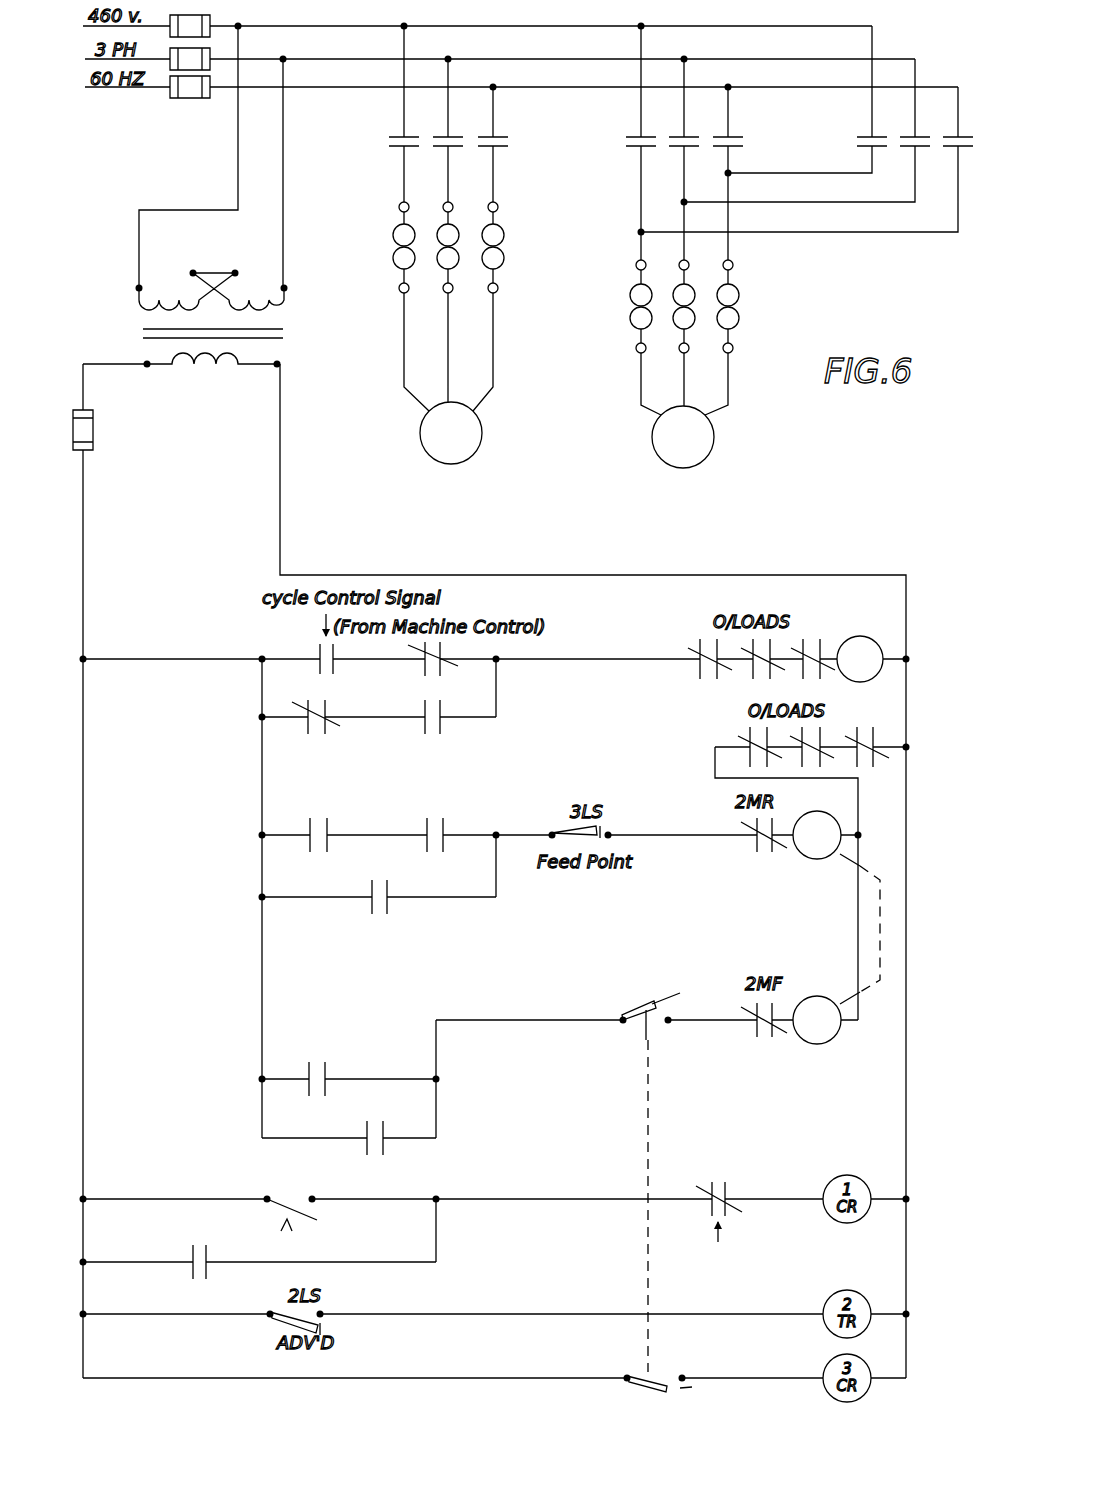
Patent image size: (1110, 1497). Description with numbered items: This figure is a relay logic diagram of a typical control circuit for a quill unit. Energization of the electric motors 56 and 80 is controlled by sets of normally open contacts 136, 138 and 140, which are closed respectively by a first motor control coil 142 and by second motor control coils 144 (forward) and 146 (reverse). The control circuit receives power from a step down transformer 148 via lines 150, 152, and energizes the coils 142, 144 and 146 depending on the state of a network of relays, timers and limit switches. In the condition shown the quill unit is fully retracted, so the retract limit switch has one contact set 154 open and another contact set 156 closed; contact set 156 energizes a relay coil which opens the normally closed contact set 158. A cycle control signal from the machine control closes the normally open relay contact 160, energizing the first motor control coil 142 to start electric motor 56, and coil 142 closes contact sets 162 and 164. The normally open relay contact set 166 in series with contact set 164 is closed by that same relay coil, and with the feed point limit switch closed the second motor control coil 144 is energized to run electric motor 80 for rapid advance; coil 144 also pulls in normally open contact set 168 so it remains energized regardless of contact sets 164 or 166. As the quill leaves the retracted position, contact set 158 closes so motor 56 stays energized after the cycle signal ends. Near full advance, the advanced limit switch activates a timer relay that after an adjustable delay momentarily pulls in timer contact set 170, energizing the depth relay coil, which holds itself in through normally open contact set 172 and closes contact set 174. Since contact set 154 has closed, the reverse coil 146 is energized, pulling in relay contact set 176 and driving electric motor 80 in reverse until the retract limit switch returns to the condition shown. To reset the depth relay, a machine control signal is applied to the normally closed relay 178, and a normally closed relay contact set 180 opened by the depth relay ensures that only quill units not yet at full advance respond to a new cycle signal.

The normally open contacts 136 is at (392, 131).
The normally open contacts 138 is at (626, 131).
The normally open contacts 140 is at (858, 131).
The electric motor 56 is at (482, 424).
The electric motor 80 is at (714, 427).
The step down transformer 148 is at (292, 332).
The line 150 is at (83, 478).
The line 152 is at (280, 465).
The first motor control coil 142 is at (868, 637).
The second motor control coil (forward) 144 is at (840, 796).
The second motor control coil (reverse) 146 is at (846, 978).
The contact set 154 is at (640, 1028).
The contact set 156 is at (704, 1372).
The normally closed contact set 158 is at (312, 698).
The normally open relay contact 160 is at (316, 647).
The contact set 162 is at (452, 733).
The contact set 164 is at (303, 822).
The normally open relay contact set 166 is at (452, 826).
The normally open contact set 168 is at (378, 914).
The timer contact set 170 is at (318, 1195).
The normally open contact set 172 is at (212, 1258).
The contact set 174 is at (392, 1150).
The relay contact set 176 is at (317, 1056).
The normally closed relay 178 is at (723, 1180).
The normally closed relay contact set 180 is at (418, 641).